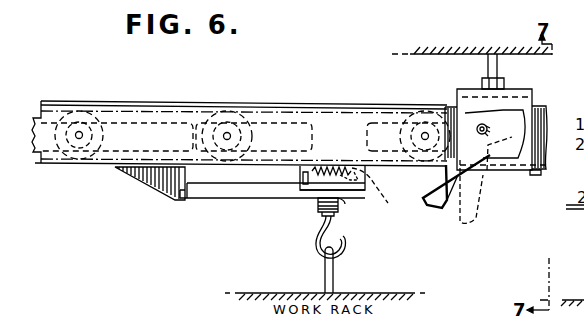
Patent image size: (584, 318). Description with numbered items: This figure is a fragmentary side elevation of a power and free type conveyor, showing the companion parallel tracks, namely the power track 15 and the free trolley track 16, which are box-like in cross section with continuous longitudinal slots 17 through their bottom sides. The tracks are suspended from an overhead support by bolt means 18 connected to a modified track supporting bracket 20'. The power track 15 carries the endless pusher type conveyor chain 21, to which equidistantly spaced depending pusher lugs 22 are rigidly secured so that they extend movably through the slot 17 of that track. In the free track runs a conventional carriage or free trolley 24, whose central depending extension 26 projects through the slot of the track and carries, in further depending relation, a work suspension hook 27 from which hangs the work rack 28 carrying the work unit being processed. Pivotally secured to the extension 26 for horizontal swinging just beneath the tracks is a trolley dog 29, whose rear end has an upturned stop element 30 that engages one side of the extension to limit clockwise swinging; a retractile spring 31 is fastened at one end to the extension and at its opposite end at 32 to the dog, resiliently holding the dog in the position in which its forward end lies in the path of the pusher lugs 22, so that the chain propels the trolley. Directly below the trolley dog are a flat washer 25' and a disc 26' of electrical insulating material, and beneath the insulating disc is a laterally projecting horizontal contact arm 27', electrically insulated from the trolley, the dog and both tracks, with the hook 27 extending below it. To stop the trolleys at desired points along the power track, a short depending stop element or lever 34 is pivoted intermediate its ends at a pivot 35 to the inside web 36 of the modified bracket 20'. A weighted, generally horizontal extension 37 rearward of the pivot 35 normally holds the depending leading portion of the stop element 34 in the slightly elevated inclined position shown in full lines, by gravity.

The power track 15 is at (547, 113).
The free trolley track 16 is at (266, 114).
The longitudinal slot 17 is at (578, 180).
The bolt means 18 is at (498, 71).
The modified track supporting bracket 20' is at (494, 142).
The conveyor chain 21 is at (127, 125).
The pusher lug 22 is at (150, 180).
The free trolley 24 is at (330, 140).
The flat washer 25' is at (573, 219).
The depending extension 26 is at (364, 179).
The insulating disc 26' is at (358, 216).
The work suspension hook 27 is at (305, 255).
The contact arm 27' is at (298, 225).
The work rack 28 is at (333, 278).
The trolley dog 29 is at (238, 190).
The upturned stop element 30 is at (350, 194).
The retractile spring 31 is at (318, 190).
The spring fastening point 32 is at (302, 176).
The stop element 34 is at (443, 204).
The pivot 35 is at (480, 127).
The inside web 36 is at (537, 176).
The weighted horizontal extension 37 is at (513, 125).